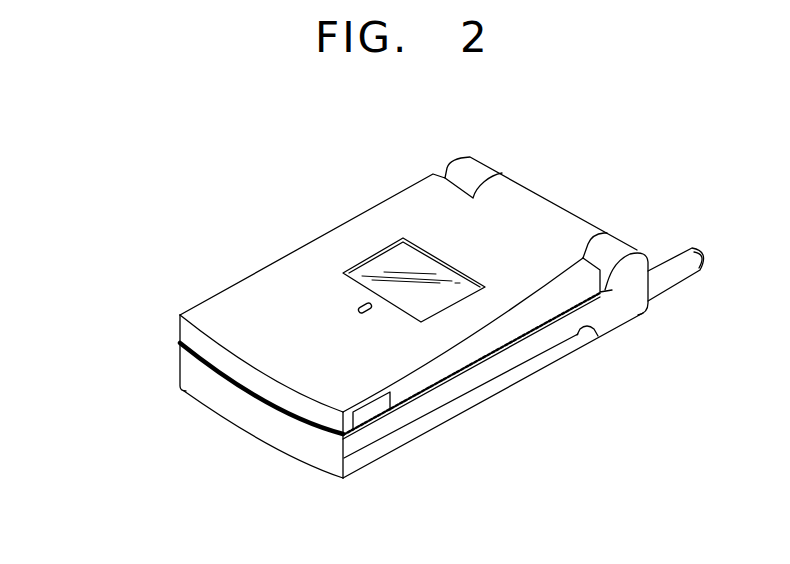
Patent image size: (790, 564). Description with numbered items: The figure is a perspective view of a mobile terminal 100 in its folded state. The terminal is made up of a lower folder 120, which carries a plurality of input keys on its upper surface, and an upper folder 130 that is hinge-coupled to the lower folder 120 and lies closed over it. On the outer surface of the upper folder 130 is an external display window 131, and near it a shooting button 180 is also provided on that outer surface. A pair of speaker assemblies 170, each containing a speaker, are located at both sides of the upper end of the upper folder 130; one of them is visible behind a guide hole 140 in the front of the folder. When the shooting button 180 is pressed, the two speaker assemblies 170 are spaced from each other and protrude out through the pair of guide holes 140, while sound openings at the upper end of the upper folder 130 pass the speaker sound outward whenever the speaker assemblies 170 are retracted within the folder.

The mobile terminal 100 is at (327, 212).
The lower folder 120 is at (176, 368).
The upper folder 130 is at (176, 322).
The external display window 131 is at (441, 297).
The guide hole 140 is at (366, 412).
The speaker assembly 170 is at (375, 409).
The shooting button 180 is at (367, 313).